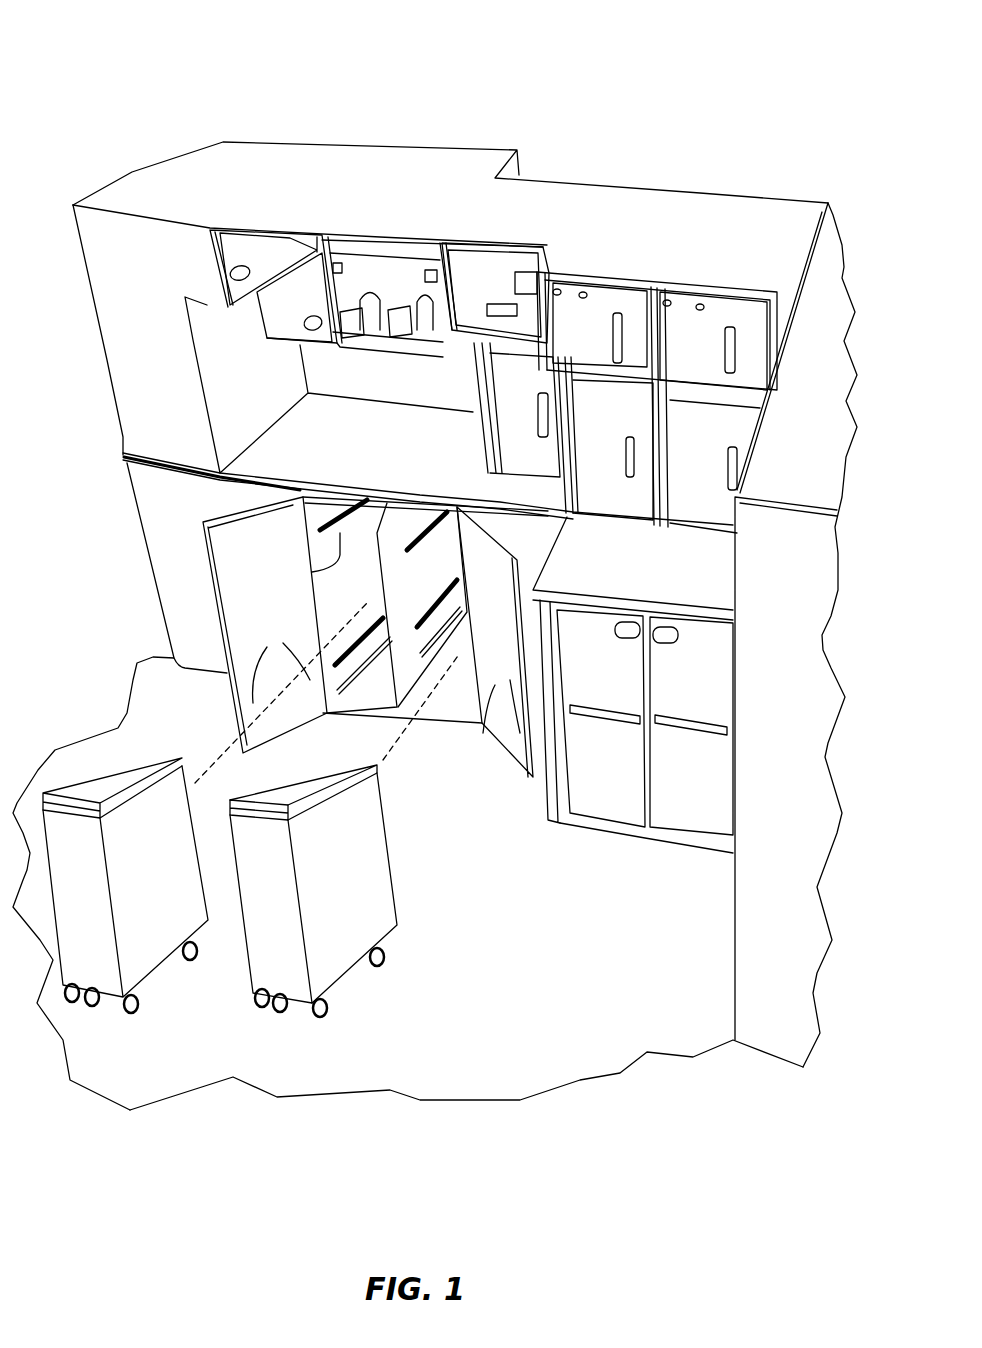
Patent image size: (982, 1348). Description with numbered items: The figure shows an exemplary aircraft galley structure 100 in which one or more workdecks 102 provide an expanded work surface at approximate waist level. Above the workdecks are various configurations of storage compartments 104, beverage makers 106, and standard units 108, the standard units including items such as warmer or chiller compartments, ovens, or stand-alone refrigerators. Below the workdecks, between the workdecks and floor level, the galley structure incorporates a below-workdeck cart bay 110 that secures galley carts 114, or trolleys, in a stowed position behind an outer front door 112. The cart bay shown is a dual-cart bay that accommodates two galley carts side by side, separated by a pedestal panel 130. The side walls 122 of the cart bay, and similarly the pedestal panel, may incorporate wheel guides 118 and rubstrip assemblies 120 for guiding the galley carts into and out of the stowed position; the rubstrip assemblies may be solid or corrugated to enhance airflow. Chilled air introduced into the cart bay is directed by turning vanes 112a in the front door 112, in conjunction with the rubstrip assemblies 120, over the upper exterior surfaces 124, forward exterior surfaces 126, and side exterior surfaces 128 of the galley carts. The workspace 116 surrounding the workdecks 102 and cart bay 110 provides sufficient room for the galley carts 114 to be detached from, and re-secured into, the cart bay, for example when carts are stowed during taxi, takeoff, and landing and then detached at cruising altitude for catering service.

The galley structure 100 is at (73, 64).
The workdeck 102 is at (310, 467).
The storage compartment 104 is at (245, 250).
The beverage maker 106 is at (407, 283).
The standard unit 108 is at (590, 323).
The cart bay 110 is at (435, 758).
The front door 112 is at (688, 805).
The turning vane 112a is at (495, 735).
The galley cart 114 is at (243, 1031).
The workspace 116 is at (538, 975).
The wheel guide 118 is at (353, 685).
The rubstrip assembly 120 is at (312, 572).
The side wall 122 is at (357, 588).
The upper exterior surface 124 is at (127, 777).
The forward exterior surface 126 is at (277, 933).
The side exterior surface 128 is at (337, 917).
The pedestal panel 130 is at (432, 567).